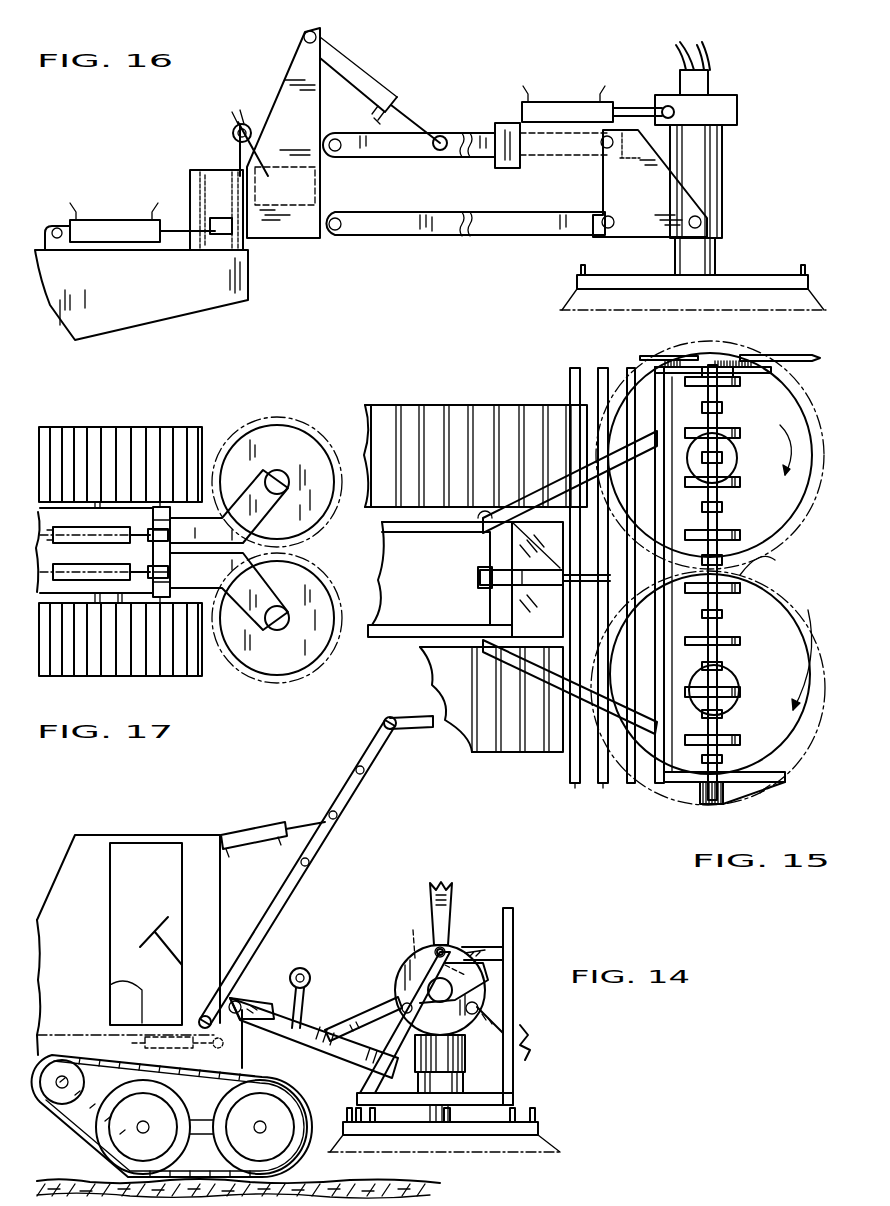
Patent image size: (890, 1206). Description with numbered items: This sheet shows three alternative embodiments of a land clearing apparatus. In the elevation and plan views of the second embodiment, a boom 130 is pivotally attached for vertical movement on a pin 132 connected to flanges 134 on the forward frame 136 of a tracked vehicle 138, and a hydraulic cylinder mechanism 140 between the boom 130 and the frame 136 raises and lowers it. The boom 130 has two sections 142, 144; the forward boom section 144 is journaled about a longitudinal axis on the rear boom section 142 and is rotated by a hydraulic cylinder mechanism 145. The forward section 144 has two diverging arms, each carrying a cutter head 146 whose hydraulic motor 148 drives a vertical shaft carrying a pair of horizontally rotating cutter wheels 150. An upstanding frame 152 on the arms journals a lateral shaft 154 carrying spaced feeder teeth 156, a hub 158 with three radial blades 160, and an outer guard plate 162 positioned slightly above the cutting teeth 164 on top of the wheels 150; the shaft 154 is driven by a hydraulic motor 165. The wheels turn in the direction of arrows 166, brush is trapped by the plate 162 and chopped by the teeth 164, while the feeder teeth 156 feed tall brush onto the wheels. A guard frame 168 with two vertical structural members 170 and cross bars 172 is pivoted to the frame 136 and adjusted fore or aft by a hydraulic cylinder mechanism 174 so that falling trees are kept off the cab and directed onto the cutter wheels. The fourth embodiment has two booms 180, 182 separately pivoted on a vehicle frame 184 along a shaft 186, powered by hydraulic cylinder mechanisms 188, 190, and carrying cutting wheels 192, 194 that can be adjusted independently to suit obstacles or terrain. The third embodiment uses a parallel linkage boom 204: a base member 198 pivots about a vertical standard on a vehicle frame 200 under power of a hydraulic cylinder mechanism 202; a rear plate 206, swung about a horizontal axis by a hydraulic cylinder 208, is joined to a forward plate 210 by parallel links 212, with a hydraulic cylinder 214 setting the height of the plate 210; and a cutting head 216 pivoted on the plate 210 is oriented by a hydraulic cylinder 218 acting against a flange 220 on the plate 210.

In FIG. 14, the boom 130 is at (328, 990).
In FIG. 14, the pin 132 is at (268, 990).
In FIG. 14, the flanges 134 is at (288, 1030).
In FIG. 14, the forward frame 136 is at (242, 1068).
In FIG. 15, the tracked vehicle 138 is at (440, 573).
In FIG. 14, the tracked vehicle 138 is at (162, 832).
In FIG. 14, the hydraulic cylinder mechanism 140 is at (164, 1037).
In FIG. 14, the boom section 142 is at (298, 972).
In FIG. 15, the boom section 144 is at (717, 486).
In FIG. 14, the boom section 144 is at (340, 1028).
In FIG. 15, the hydraulic cylinder mechanism 145 is at (540, 548).
In FIG. 14, the hydraulic cylinder mechanism 145 is at (298, 960).
In FIG. 15, the cutter head 146 is at (731, 454).
In FIG. 14, the cutter head 146 is at (470, 1081).
In FIG. 14, the hydraulic motor 148 is at (465, 1059).
In FIG. 15, the cutter wheels 150 is at (780, 405).
In FIG. 14, the cutter wheels 150 is at (538, 1140).
In FIG. 14, the upstanding frame 152 is at (513, 932).
In FIG. 15, the shaft 154 is at (769, 568).
In FIG. 14, the shaft 154 is at (478, 952).
In FIG. 15, the feeder teeth 156 is at (722, 508).
In FIG. 14, the feeder teeth 156 is at (413, 940).
In FIG. 15, the hub 158 is at (714, 365).
In FIG. 14, the hub 158 is at (447, 948).
In FIG. 15, the blades 160 is at (790, 358).
In FIG. 14, the blades 160 is at (450, 890).
In FIG. 15, the outer guard plate 162 is at (760, 792).
In FIG. 14, the cutting teeth 164 is at (540, 1113).
In FIG. 15, the hydraulic motor 165 is at (700, 803).
In FIG. 15, the arrows 166 is at (794, 554).
In FIG. 15, the guard frame 168 is at (603, 368).
In FIG. 14, the guard frame 168 is at (342, 785).
In FIG. 15, the structural members 170 is at (540, 480).
In FIG. 15, the cross bars 172 is at (575, 785).
In FIG. 15, the hydraulic cylinder mechanism 174 is at (497, 592).
In FIG. 14, the hydraulic cylinder mechanism 174 is at (250, 830).
In FIG. 17, the boom 180 is at (203, 520).
In FIG. 17, the boom 182 is at (212, 640).
In FIG. 17, the vehicle frame 184 is at (106, 500).
In FIG. 17, the shaft 186 is at (162, 507).
In FIG. 17, the hydraulic cylinder mechanism 188 is at (98, 518).
In FIG. 17, the hydraulic cylinder mechanism 190 is at (100, 556).
In FIG. 17, the cutting wheel 192 is at (285, 422).
In FIG. 17, the cutting wheel 194 is at (305, 580).
In FIG. 16, the base member 198 is at (190, 186).
In FIG. 16, the vehicle frame 200 is at (248, 268).
In FIG. 16, the hydraulic cylinder mechanism 202 is at (104, 226).
In FIG. 16, the boom 204 is at (448, 120).
In FIG. 16, the rear plate 206 is at (290, 90).
In FIG. 16, the hydraulic cylinder 208 is at (233, 130).
In FIG. 16, the forward plate 210 is at (705, 198).
In FIG. 16, the parallel links 212 is at (418, 176).
In FIG. 16, the hydraulic cylinder 214 is at (362, 78).
In FIG. 16, the cutting head 216 is at (722, 152).
In FIG. 16, the hydraulic cylinder 218 is at (565, 108).
In FIG. 16, the flange 220 is at (505, 125).